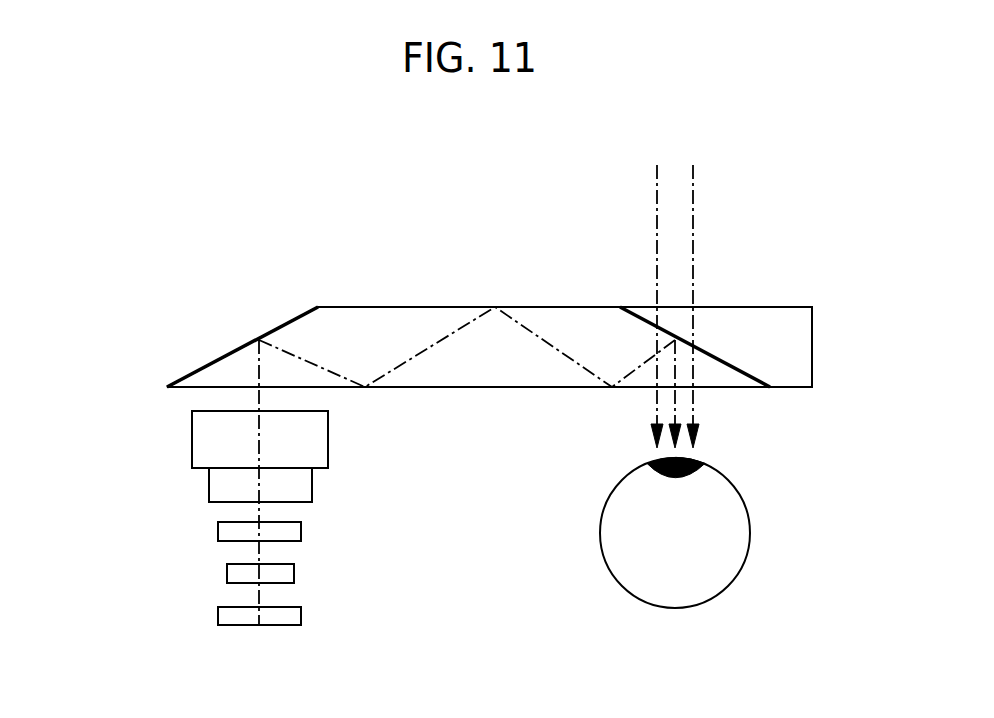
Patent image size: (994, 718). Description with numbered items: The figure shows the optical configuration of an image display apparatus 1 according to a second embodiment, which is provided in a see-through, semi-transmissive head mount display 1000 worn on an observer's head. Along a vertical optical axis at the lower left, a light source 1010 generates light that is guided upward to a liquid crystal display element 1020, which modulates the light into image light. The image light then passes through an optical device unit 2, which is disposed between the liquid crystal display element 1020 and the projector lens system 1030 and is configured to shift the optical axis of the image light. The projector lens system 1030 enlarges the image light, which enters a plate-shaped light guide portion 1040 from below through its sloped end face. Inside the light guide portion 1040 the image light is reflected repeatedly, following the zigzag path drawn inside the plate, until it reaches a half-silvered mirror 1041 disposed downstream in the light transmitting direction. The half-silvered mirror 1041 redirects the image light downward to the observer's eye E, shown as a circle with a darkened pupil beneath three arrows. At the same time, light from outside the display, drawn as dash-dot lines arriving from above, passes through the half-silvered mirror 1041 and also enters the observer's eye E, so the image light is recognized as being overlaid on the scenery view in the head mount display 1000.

The head mount display 1000 is at (437, 395).
The image display apparatus 1 is at (302, 273).
The light guide portion 1040 is at (410, 307).
The half-silvered mirror 1041 is at (727, 357).
The projector lens system 1030 is at (192, 440).
The optical device unit 2 is at (218, 530).
The liquid crystal display element 1020 is at (227, 575).
The light source 1010 is at (218, 616).
The observer's eye E is at (655, 583).